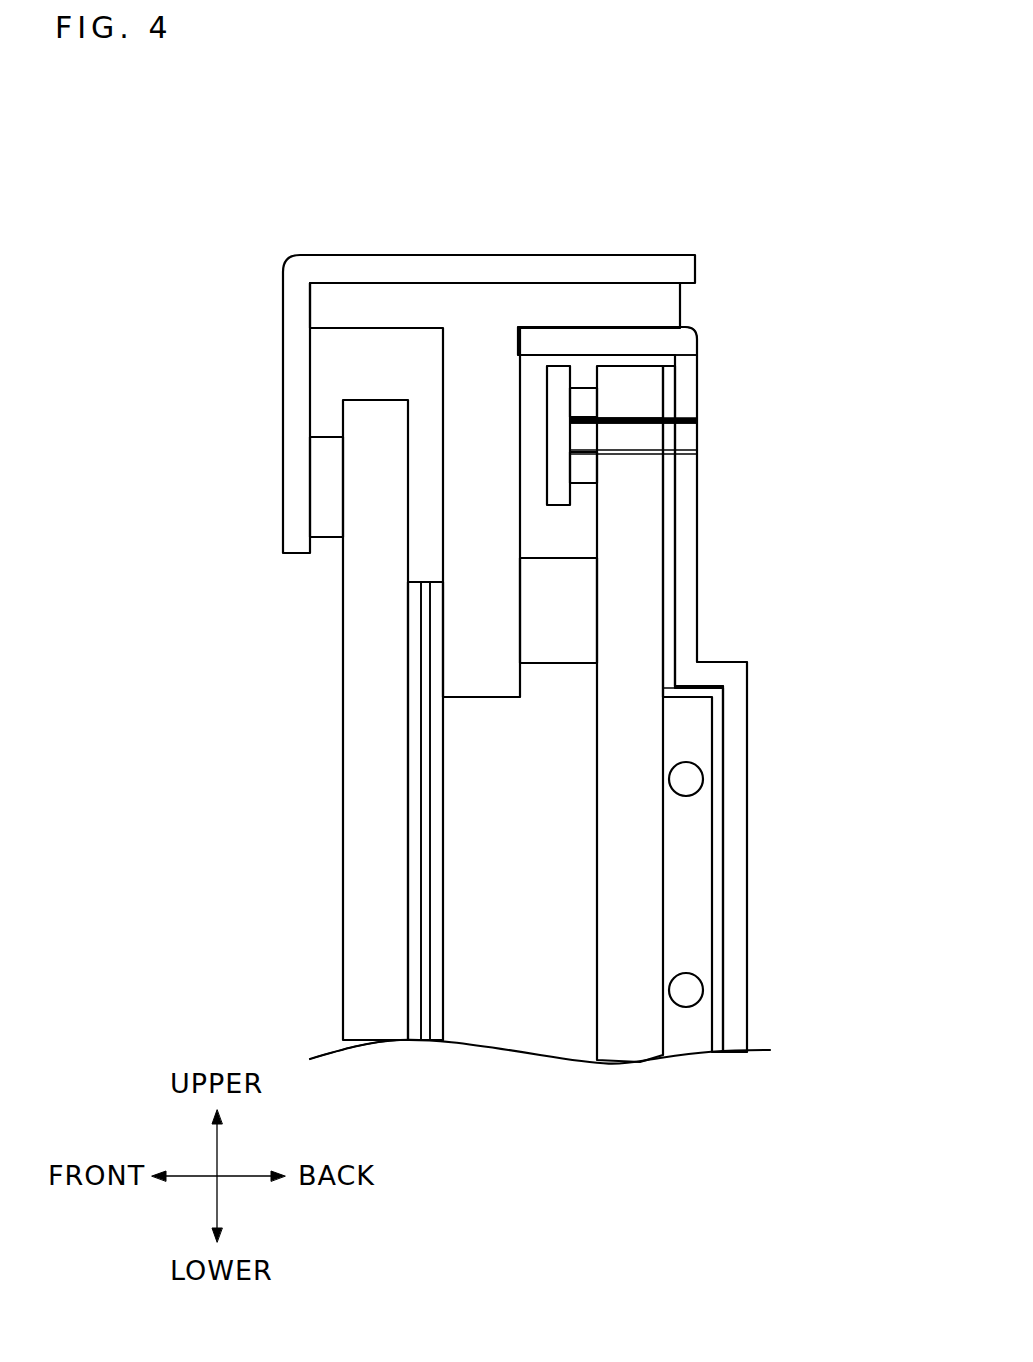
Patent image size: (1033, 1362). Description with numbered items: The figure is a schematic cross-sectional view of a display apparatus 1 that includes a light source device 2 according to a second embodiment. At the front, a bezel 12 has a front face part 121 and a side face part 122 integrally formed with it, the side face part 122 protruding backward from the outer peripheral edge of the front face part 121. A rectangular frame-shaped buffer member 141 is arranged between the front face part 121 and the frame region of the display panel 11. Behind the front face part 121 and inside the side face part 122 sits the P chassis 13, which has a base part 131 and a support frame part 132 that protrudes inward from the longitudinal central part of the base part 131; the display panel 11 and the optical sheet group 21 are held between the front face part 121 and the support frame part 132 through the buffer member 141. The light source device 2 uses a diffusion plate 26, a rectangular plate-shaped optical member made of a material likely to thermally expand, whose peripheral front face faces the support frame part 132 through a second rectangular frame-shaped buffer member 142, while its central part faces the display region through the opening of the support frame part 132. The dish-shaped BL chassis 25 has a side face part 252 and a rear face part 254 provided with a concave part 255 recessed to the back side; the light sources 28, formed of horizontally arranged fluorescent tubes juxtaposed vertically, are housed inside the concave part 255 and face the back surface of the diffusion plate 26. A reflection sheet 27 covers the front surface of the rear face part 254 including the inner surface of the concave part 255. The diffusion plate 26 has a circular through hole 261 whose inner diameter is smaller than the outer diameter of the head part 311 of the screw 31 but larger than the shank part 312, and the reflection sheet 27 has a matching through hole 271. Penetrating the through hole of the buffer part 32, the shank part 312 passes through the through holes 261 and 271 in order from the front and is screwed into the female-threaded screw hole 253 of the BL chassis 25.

The display apparatus 1 is at (748, 131).
The light source device 2 is at (518, 1098).
The display panel 11 is at (358, 866).
The bezel 12 is at (387, 180).
The front face part 121 is at (287, 325).
The side face part 122 is at (352, 258).
The P chassis 13 is at (485, 408).
The base part 131 is at (637, 300).
The support frame part 132 is at (457, 560).
The buffer member 141 is at (328, 447).
The buffer member 142 is at (552, 650).
The optical sheet group 21 is at (423, 1042).
The BL chassis 25 is at (735, 1066).
The side face part 252 is at (658, 324).
The screw hole 253 is at (694, 444).
The rear face part 254 is at (688, 553).
The concave part 255 is at (705, 731).
The diffusion plate 26 is at (632, 1066).
The through hole 261 is at (640, 418).
The reflection sheet 27 is at (706, 690).
The through hole 271 is at (680, 434).
The light source 28 is at (704, 774).
The screw 31 is at (541, 396).
The head part 311 is at (560, 377).
The shank part 312 is at (615, 418).
The buffer part 32 is at (583, 388).